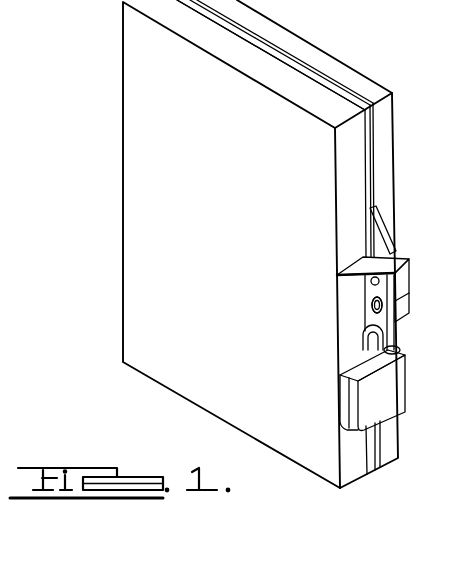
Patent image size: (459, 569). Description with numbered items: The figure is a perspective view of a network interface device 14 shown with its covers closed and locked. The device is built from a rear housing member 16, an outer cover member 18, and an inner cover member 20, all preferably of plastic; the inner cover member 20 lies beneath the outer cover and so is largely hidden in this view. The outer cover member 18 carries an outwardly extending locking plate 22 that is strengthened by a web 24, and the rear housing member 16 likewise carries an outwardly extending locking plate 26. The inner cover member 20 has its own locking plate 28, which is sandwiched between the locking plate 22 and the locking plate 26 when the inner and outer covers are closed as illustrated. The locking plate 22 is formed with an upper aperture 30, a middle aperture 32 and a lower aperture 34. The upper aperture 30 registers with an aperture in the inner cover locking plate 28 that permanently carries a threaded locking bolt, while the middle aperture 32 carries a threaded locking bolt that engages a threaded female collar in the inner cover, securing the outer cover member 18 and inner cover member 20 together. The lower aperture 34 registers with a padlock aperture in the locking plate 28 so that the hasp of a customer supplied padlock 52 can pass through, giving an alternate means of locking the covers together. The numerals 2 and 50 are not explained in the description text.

The section line indicator 2 is at (363, 234).
The network interface device 14 is at (296, 488).
The rear housing member 16 is at (333, 65).
The outer cover member 18 is at (145, 213).
The inner cover member 20 is at (312, 78).
The locking plate 22 is at (375, 312).
The web 24 is at (360, 264).
The locking plate 26 is at (380, 244).
The locking plate 28 is at (396, 323).
The upper aperture 30 is at (372, 283).
The middle aperture 32 is at (382, 310).
The lower aperture 34 is at (368, 327).
The padlock 50 is at (367, 378).
The padlock 52 is at (400, 393).